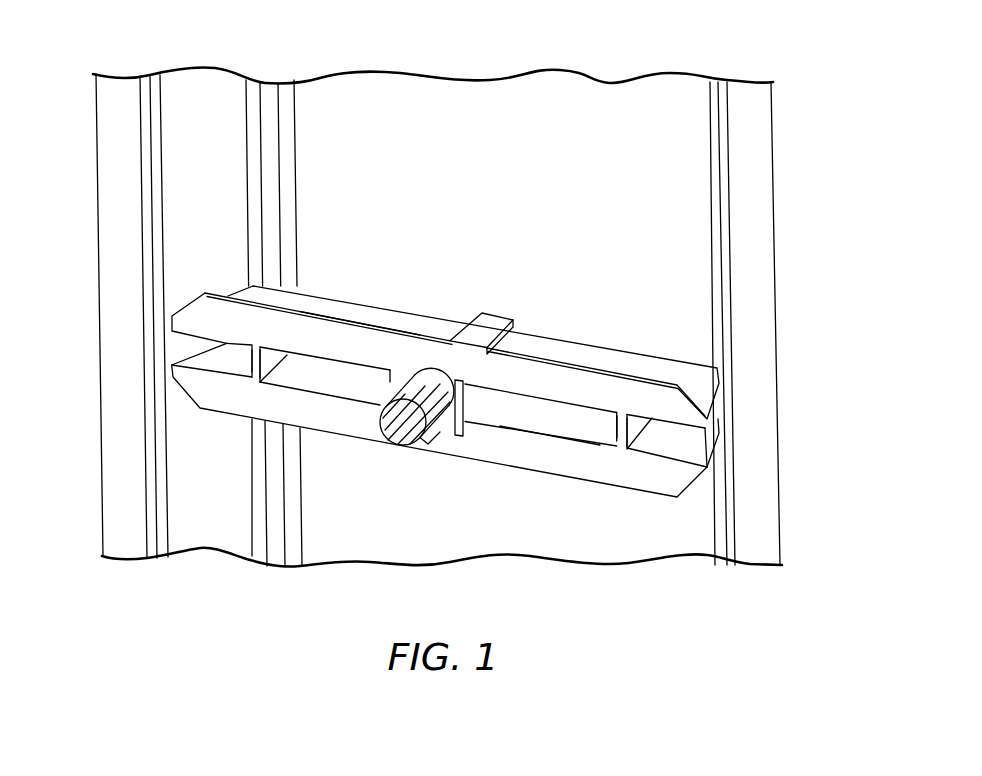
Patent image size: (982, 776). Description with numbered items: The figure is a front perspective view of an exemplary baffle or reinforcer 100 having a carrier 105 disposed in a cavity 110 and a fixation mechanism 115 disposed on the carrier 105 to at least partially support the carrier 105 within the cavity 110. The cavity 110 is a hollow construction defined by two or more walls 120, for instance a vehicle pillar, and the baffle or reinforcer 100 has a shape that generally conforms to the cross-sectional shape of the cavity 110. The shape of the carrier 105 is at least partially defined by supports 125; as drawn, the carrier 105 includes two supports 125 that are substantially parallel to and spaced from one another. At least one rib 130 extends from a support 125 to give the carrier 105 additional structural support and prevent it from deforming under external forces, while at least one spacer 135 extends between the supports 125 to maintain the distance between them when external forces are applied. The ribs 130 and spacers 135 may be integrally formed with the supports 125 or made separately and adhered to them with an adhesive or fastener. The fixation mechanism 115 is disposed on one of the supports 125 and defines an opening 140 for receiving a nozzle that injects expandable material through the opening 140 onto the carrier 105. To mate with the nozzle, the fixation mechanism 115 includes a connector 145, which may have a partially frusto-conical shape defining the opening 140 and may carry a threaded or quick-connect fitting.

The baffle or reinforcer 100 is at (597, 328).
The carrier 105 is at (420, 308).
The cavity 110 is at (487, 118).
The fixation mechanism 115 is at (452, 434).
The walls 120 is at (142, 293).
The supports 125 is at (358, 311).
The rib 130 is at (530, 347).
The spacer 135 is at (250, 365).
The opening 140 is at (405, 433).
The connector 145 is at (426, 443).